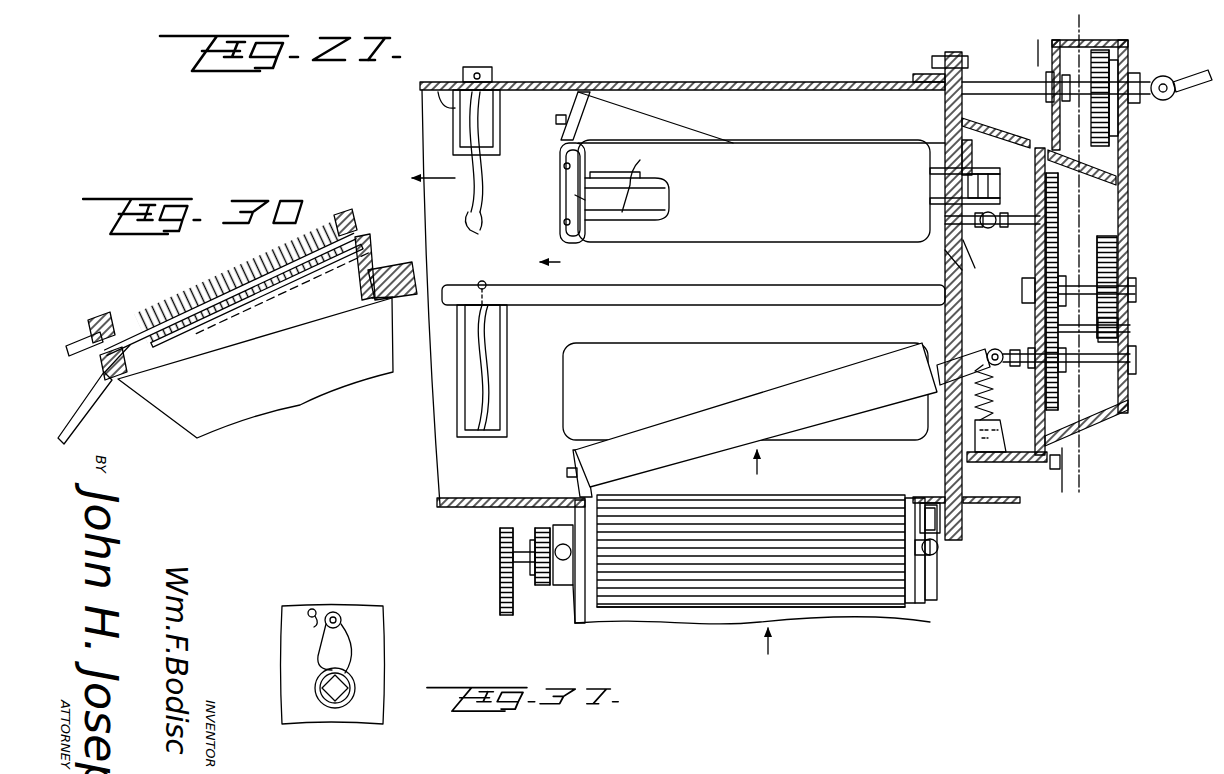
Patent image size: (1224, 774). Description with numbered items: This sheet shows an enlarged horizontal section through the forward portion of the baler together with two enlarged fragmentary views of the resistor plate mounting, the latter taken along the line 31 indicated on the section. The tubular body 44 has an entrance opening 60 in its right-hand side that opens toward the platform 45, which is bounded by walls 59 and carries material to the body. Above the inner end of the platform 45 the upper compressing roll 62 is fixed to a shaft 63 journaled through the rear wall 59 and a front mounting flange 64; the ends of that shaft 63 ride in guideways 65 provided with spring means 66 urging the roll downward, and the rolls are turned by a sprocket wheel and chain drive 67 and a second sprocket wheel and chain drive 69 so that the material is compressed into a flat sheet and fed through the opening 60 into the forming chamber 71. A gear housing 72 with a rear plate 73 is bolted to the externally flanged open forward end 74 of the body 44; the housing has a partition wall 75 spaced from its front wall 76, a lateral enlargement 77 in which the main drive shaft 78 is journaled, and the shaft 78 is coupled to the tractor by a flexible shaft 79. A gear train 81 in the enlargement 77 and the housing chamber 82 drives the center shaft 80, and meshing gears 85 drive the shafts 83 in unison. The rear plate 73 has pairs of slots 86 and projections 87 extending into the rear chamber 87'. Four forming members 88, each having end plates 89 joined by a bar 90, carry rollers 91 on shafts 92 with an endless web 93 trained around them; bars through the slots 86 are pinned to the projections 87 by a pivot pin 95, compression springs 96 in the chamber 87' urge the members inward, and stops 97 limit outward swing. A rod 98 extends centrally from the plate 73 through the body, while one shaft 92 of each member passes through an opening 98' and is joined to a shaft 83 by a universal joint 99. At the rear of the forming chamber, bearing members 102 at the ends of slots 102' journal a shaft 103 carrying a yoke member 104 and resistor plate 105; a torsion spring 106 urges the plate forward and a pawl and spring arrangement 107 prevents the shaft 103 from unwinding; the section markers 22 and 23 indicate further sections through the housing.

In FIG. 21, the section line 22 is at (1036, 54).
In FIG. 21, the section line 23 is at (1090, 34).
In FIG. 30, the section line 31 is at (85, 375).
In FIG. 21, the tubular body 44 is at (437, 505).
In FIG. 21, the platform 45 is at (800, 615).
In FIG. 21, the walls 59 is at (578, 625).
In FIG. 21, the entrance opening 60 is at (912, 496).
In FIG. 21, the upper compressing roll 62 is at (692, 600).
In FIG. 21, the shafts 63 is at (938, 546).
In FIG. 21, the front mounting flange 64 is at (940, 582).
In FIG. 21, the guideways 65 is at (568, 588).
In FIG. 21, the spring means 66 is at (563, 532).
In FIG. 21, the sprocket wheel and chain drive 67 is at (500, 583).
In FIG. 21, the sprocket wheel and chain drive 69 is at (515, 568).
In FIG. 21, the forming chamber 71 is at (828, 101).
In FIG. 21, the gear housing 72 is at (1132, 386).
In FIG. 21, the rear plate 73 is at (945, 260).
In FIG. 21, the externally flanged open forward end 74 is at (940, 55).
In FIG. 21, the partition wall 75 is at (1035, 262).
In FIG. 21, the front wall 76 is at (1130, 266).
In FIG. 21, the lateral enlargement 77 is at (1126, 50).
In FIG. 21, the main drive shaft 78 is at (1022, 88).
In FIG. 21, the flexible shaft 79 is at (1178, 74).
In FIG. 21, the center shaft 80 is at (1137, 292).
In FIG. 21, the gear train 81 is at (1130, 242).
In FIG. 21, the housing chamber 82 is at (1120, 408).
In FIG. 21, the shafts 83 is at (1093, 360).
In FIG. 21, the meshing gears 85 is at (1125, 332).
In FIG. 21, the slots 86 is at (964, 150).
In FIG. 21, the projections 87 is at (978, 254).
In FIG. 21, the rear chamber 87' is at (1007, 466).
In FIG. 21, the forming members 88 is at (556, 185).
In FIG. 21, the end plates 89 is at (925, 191).
In FIG. 21, the bar 90 is at (668, 190).
In FIG. 21, the rollers 91 is at (634, 180).
In FIG. 21, the shafts 92 is at (565, 212).
In FIG. 21, the endless web 93 is at (690, 240).
In FIG. 21, the pivot pin 95 is at (1000, 352).
In FIG. 21, the compression springs 96 is at (993, 404).
In FIG. 21, the stops 97 is at (582, 98).
In FIG. 21, the rod 98 is at (693, 306).
In FIG. 21, the opening 98' is at (980, 262).
In FIG. 21, the universal joints 99 is at (990, 228).
In FIG. 21, the bearing members 102 is at (501, 106).
In FIG. 30, the bearing members 102 is at (241, 332).
In FIG. 31, the bearing members 102 is at (333, 680).
In FIG. 21, the slots 102' is at (439, 304).
In FIG. 30, the slots 102' is at (361, 320).
In FIG. 21, the shaft 103 is at (482, 75).
In FIG. 30, the shaft 103 is at (357, 224).
In FIG. 31, the shaft 103 is at (347, 686).
In FIG. 21, the yoke member 104 is at (447, 88).
In FIG. 30, the yoke member 104 is at (236, 320).
In FIG. 21, the resistor plate 105 is at (474, 232).
In FIG. 30, the resistor plate 105 is at (308, 396).
In FIG. 30, the torsion spring 106 is at (200, 286).
In FIG. 30, the pawl and spring arrangement 107 is at (88, 320).
In FIG. 31, the pawl and spring arrangement 107 is at (350, 630).